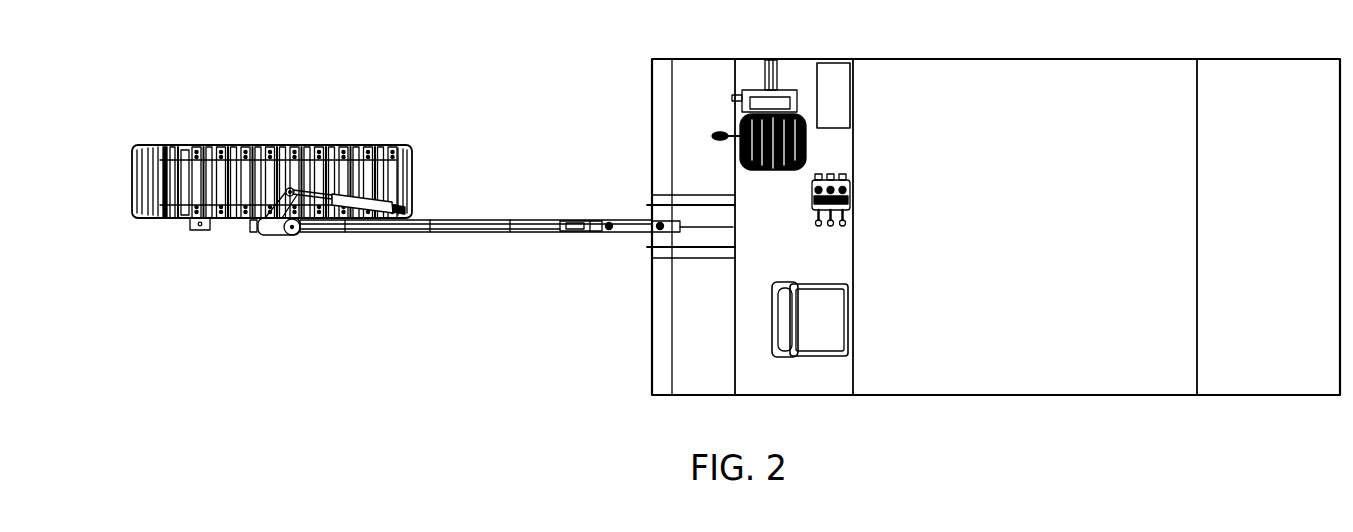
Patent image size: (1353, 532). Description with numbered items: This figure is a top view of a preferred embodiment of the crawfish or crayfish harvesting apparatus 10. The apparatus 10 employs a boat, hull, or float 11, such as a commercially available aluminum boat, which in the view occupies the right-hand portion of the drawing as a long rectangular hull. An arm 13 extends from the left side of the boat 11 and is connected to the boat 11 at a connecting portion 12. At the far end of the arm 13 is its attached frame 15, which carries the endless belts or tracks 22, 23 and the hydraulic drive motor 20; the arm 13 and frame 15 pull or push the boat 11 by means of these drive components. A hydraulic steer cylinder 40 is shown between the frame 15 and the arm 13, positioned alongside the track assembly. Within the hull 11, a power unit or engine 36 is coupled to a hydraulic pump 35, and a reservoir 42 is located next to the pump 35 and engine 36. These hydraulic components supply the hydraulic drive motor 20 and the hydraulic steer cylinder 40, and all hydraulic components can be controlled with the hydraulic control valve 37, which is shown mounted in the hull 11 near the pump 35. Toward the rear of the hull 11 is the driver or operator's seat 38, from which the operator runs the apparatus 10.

The crawfish harvesting apparatus 10 is at (469, 50).
The boat 11 is at (1077, 58).
The connecting portion 12 is at (637, 251).
The arm 13 is at (505, 233).
The frame 15 is at (268, 238).
The drive motor 20 is at (202, 228).
The endless belt 22 is at (186, 220).
The endless belt 23 is at (210, 145).
The hydraulic pump 35 is at (768, 47).
The engine 36 is at (773, 121).
The hydraulic control valve 37 is at (853, 195).
The operator's seat 38 is at (855, 313).
The hydraulic steer cylinder 40 is at (385, 232).
The reservoir 42 is at (838, 66).